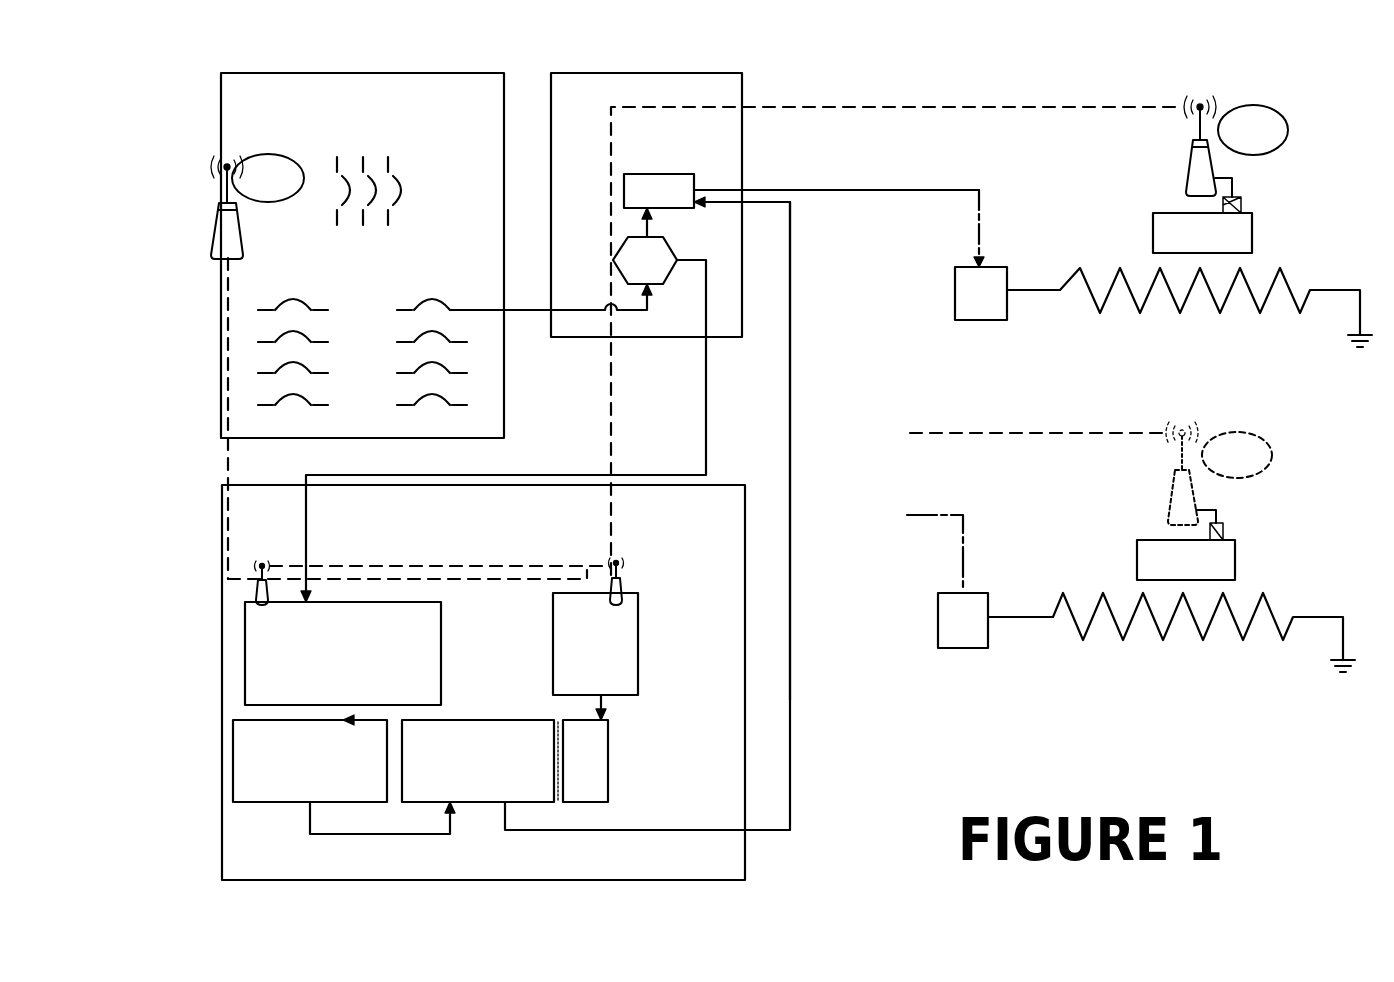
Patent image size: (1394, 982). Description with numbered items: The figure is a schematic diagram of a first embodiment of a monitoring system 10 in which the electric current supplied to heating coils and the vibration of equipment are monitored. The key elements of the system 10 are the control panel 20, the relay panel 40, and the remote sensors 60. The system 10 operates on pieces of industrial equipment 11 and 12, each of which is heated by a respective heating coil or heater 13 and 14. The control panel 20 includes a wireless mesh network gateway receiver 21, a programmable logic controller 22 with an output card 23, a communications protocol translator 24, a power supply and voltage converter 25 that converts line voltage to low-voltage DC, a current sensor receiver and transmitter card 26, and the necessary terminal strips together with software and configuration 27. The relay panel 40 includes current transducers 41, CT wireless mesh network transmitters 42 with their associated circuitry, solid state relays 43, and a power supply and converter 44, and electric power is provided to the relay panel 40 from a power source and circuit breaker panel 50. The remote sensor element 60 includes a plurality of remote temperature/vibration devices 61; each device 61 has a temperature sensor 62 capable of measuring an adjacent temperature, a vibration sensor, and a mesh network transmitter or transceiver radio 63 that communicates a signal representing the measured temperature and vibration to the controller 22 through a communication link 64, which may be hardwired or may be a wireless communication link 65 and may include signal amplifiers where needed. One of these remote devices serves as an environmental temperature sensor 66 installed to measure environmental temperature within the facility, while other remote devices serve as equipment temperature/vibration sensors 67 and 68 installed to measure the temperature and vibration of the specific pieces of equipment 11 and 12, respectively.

The system 10 is at (872, 80).
The industrial equipment 11 is at (1240, 225).
The industrial equipment 12 is at (1220, 558).
The heating coil 13 is at (1257, 310).
The heating coil 14 is at (1243, 640).
The control panel 20 is at (725, 862).
The wireless mesh network infrastructure (gateway receiver) 21 is at (627, 645).
The programmable logic controller 22 is at (265, 780).
The output card 23 is at (480, 785).
The communications protocol translator 24 is at (598, 762).
The power supply/voltage converter 25 is at (718, 777).
The current sensor receiver and transmitter card 26 is at (265, 650).
The software and configuration 27 is at (717, 703).
The relay panel 40 is at (720, 91).
The current transducer 41 is at (640, 258).
The CT wireless mesh network transmitter 42 is at (710, 378).
The solid state relay 43 is at (668, 193).
The power supply/converter 44 is at (718, 146).
The power source and circuit breaker panel 50 is at (458, 110).
The remote sensor element 60 is at (1237, 203).
The remote temperature/vibration device 61 is at (1210, 150).
The temperature sensor 62 is at (1222, 205).
The mesh network transmitter or transceiver (radio) 63 is at (1184, 180).
The communication link 64 is at (1060, 107).
The wireless communication link 65 is at (1135, 107).
The environmental temperature sensor 66 is at (240, 240).
The equipment temperature/vibration sensor 67 is at (1207, 162).
The equipment temperature/vibration sensor 68 is at (1190, 490).